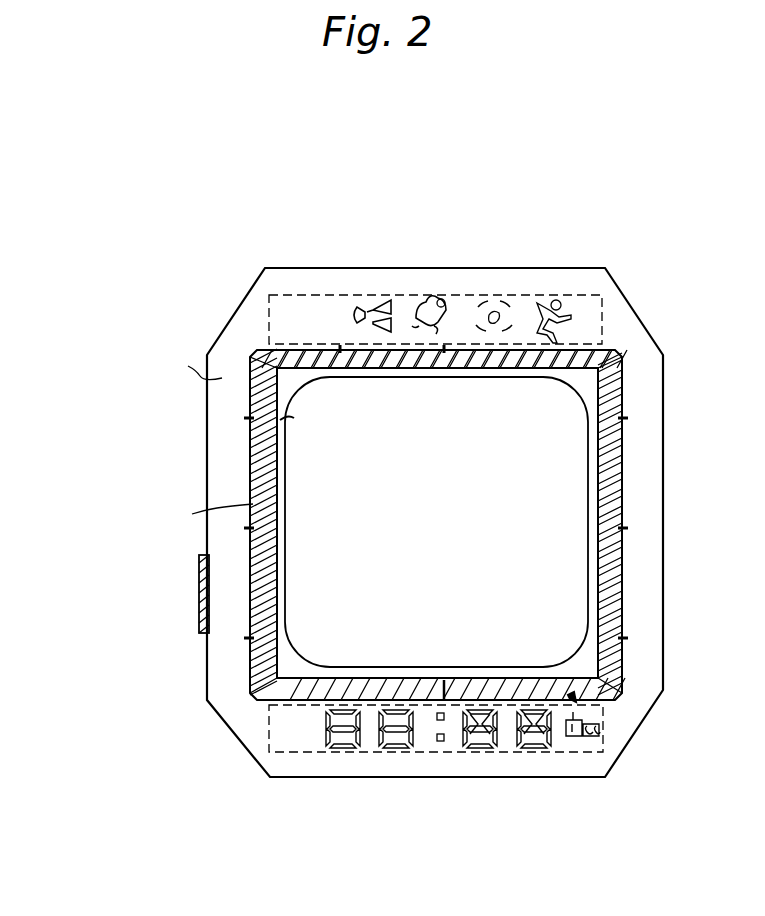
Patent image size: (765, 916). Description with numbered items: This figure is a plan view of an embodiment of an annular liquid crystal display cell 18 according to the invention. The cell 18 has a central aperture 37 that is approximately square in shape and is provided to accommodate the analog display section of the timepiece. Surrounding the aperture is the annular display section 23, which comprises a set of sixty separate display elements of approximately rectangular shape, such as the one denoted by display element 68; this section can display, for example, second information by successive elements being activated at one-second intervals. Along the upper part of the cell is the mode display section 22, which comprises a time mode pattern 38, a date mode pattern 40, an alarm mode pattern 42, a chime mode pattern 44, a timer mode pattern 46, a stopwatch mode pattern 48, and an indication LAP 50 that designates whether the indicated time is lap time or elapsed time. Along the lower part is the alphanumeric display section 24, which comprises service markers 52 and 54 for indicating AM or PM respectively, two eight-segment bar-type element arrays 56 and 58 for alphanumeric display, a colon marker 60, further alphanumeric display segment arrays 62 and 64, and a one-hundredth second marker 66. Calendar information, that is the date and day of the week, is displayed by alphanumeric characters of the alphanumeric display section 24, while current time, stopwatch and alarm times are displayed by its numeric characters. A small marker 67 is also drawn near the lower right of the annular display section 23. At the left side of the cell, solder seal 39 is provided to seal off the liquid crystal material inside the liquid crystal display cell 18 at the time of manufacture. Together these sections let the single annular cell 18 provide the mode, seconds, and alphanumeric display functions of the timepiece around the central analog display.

The liquid crystal display cell 18 is at (262, 755).
The mode display section 22 is at (352, 298).
The annular display section 23 is at (615, 450).
The alphanumeric display section 24 is at (428, 734).
The central aperture 37 is at (575, 554).
The time mode pattern 38 is at (292, 298).
The solder seal 39 is at (204, 613).
The date mode pattern 40 is at (282, 313).
The alarm mode pattern 42 is at (391, 298).
The chime mode pattern 44 is at (442, 302).
The stopwatch indicator 46 is at (497, 310).
The stopwatch mode pattern 48 is at (562, 308).
The LAP indicator 50 is at (560, 336).
The service marker 52 is at (276, 718).
The service marker 54 is at (278, 748).
The 8-segment bar-type element array 56 is at (341, 750).
The 8-segment bar-type element array 58 is at (396, 750).
The colon marker 60 is at (440, 750).
The alphanumeric display segment array 62 is at (485, 750).
The alphanumeric display segment array 64 is at (540, 750).
The 1/100 second marker 66 is at (580, 750).
The display element (marker) 67 is at (576, 708).
The display element 68 is at (278, 426).